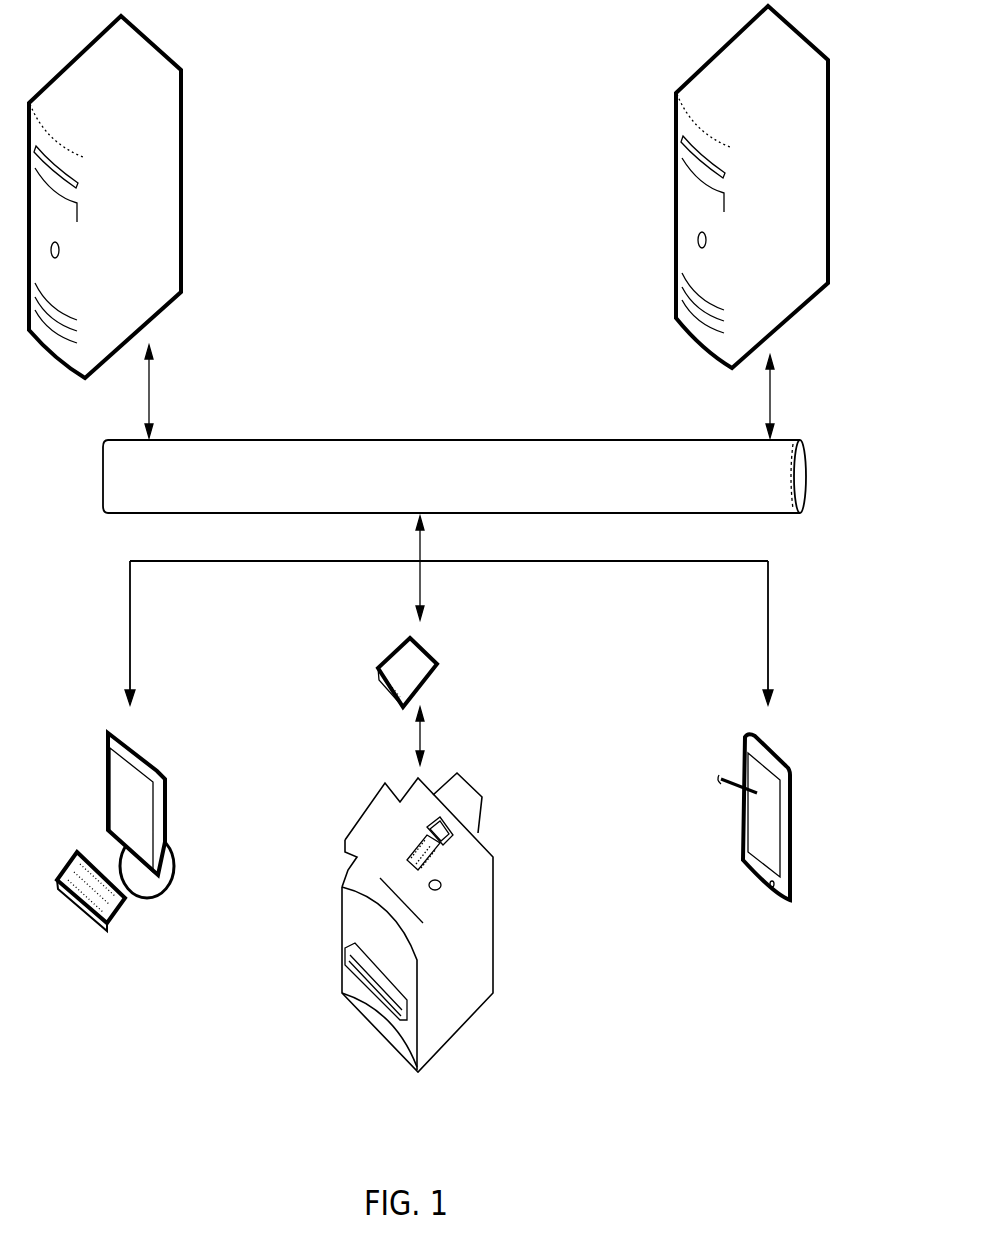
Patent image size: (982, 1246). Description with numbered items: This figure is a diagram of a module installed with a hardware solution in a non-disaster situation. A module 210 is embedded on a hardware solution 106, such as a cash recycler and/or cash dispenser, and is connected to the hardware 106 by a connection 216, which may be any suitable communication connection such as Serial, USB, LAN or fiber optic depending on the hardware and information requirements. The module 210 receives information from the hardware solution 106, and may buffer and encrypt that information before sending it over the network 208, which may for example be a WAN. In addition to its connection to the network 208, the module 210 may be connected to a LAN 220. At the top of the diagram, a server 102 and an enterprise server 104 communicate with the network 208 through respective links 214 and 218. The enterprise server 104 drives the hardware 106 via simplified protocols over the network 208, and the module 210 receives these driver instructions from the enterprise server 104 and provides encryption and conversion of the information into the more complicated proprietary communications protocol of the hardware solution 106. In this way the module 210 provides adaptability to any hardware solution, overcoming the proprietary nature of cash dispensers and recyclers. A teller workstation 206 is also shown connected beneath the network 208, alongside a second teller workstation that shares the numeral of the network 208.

The server 102 is at (183, 158).
The enterprise server 104 is at (830, 160).
The hardware solution 106 is at (496, 940).
The teller workstation 206 is at (166, 780).
The network 208 is at (807, 465).
The module 210 is at (438, 668).
The communication link between server and network 214 is at (150, 411).
The connection 216 is at (419, 735).
The communication link between enterprise server and network 218 is at (768, 418).
The LAN 220 is at (769, 632).